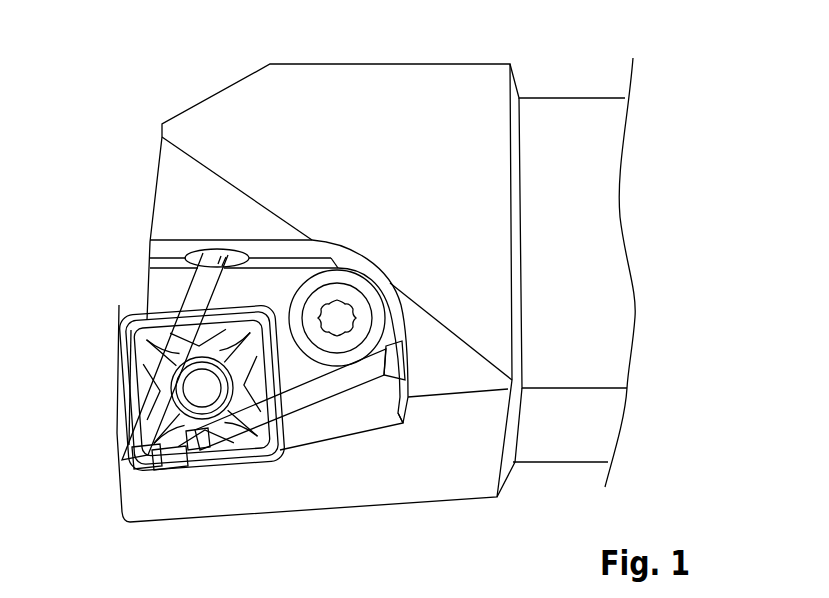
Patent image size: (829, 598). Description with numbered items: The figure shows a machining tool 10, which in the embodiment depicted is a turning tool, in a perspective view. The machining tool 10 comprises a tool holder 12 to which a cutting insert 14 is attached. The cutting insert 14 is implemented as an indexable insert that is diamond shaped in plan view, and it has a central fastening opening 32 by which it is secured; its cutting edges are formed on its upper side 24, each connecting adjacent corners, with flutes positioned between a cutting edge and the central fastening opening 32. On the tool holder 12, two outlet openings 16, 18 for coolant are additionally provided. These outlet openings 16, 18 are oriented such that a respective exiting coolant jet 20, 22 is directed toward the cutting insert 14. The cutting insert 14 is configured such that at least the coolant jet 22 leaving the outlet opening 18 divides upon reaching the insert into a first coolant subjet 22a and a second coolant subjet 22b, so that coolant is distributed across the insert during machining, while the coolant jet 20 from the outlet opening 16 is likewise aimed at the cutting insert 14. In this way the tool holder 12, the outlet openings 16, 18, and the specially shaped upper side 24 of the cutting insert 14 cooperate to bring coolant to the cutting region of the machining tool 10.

The machining tool 10 is at (572, 78).
The tool holder 12 is at (432, 88).
The cutting insert 14 is at (125, 321).
The outlet opening 16 is at (196, 262).
The outlet opening 18 is at (391, 383).
The coolant jet 20 is at (136, 405).
The coolant jet 22 is at (288, 402).
The first coolant subjet 22a is at (145, 455).
The second coolant subjet 22b is at (162, 470).
The upper side 24 is at (133, 376).
The central fastening opening 32 is at (212, 440).